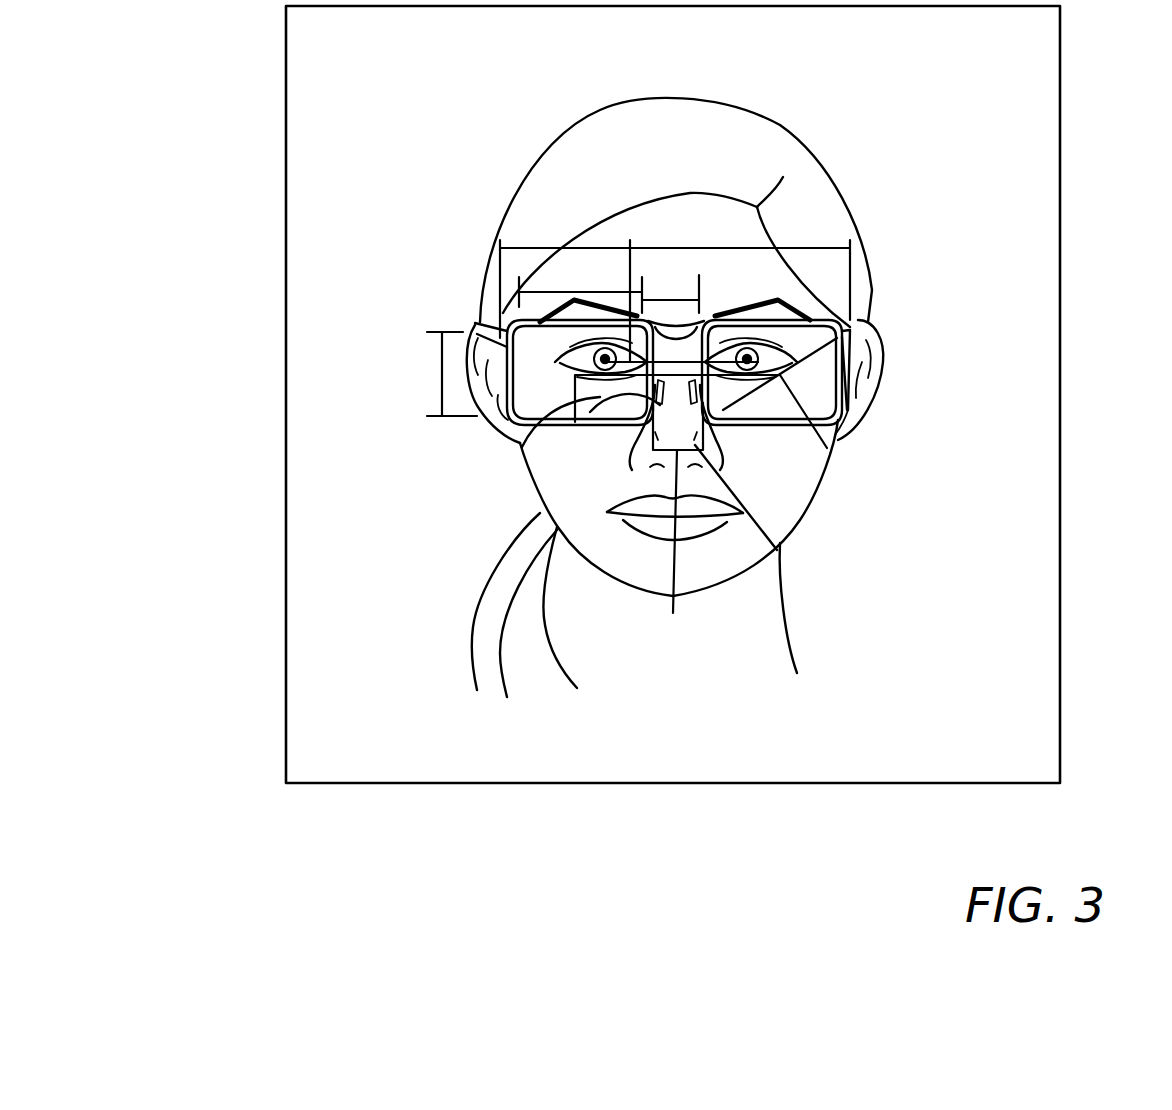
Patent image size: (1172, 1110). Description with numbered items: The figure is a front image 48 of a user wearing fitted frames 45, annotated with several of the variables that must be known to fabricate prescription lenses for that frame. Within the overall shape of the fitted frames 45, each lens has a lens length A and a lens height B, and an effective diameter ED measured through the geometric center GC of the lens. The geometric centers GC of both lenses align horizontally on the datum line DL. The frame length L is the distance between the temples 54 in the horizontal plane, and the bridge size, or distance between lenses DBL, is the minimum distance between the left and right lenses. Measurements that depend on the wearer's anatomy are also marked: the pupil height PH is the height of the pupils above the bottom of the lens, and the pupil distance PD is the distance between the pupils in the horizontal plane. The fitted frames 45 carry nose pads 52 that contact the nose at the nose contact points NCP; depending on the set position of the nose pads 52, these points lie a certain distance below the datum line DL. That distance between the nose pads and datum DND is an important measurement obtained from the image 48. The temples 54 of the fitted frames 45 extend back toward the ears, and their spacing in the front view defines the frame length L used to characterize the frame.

The front image 48 is at (286, 228).
The temples 54 is at (497, 338).
The fitted frames 45 is at (845, 378).
The nose pads 52 is at (777, 550).
The frame length L is at (592, 247).
The lens length A is at (590, 291).
The distance between lenses DBL is at (670, 300).
The pupil distance PD is at (681, 285).
The lens height B is at (441, 375).
The pupil height PH is at (523, 446).
The datum line DL is at (639, 441).
The nose contact points NCP is at (660, 385).
The distance between the nose pads and datum DND is at (678, 553).
The effective diameter ED is at (748, 393).
The geometric center GC is at (827, 448).